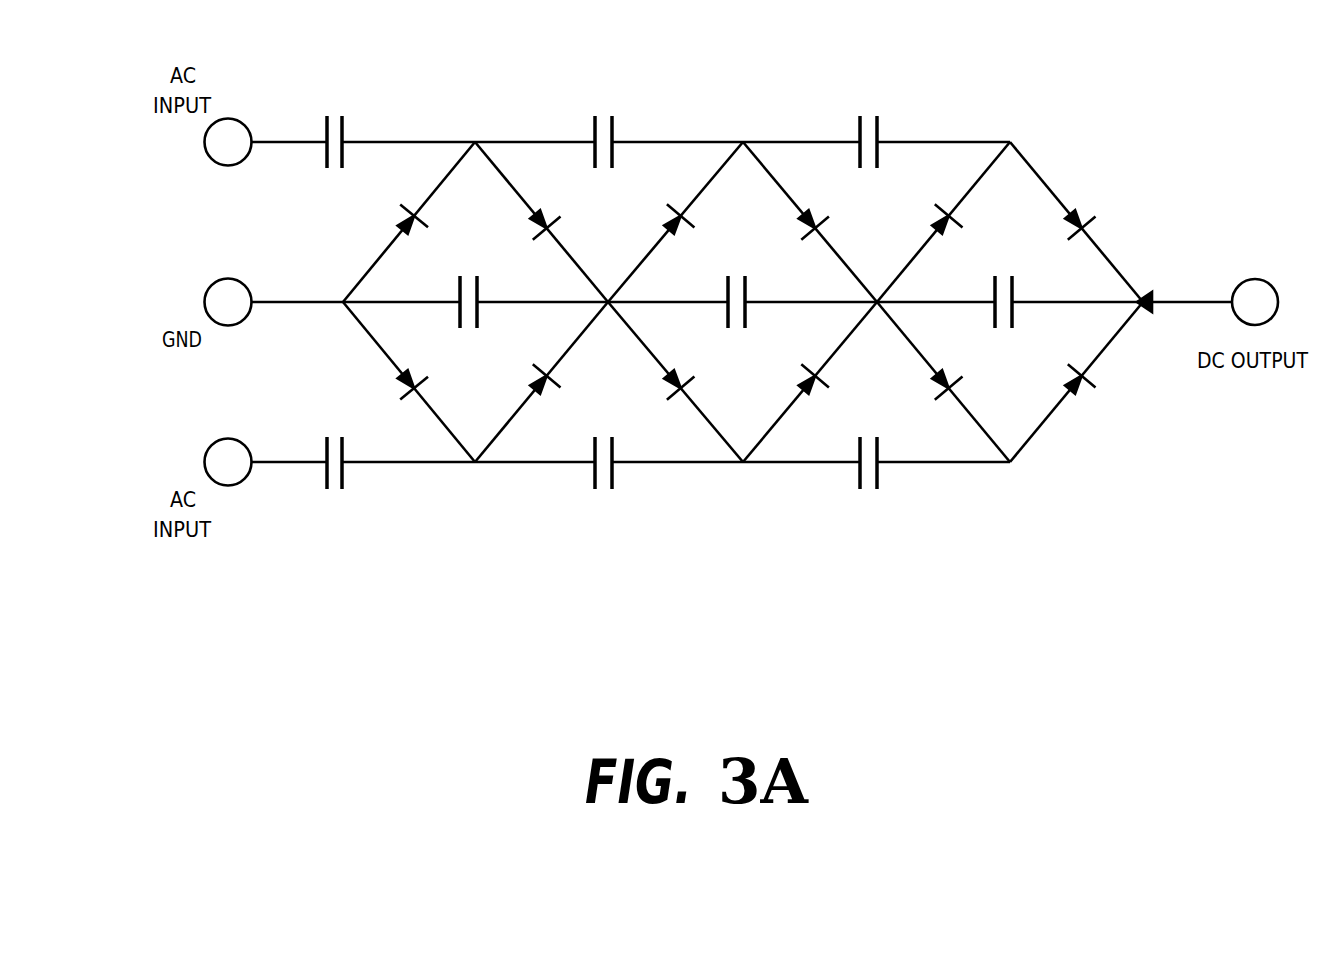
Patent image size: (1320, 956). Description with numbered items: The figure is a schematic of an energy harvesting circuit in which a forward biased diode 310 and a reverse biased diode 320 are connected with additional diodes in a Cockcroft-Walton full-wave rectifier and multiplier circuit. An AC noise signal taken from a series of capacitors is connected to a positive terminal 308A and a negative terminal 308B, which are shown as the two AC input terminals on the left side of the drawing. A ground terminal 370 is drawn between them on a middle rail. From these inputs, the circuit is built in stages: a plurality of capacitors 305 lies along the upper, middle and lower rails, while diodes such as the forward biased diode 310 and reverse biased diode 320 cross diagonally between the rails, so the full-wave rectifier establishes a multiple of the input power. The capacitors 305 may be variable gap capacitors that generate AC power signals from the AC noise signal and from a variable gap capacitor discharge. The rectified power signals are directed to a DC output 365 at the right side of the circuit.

The capacitors 305 is at (615, 133).
The positive terminal 308A is at (203, 141).
The negative terminal 308B is at (203, 462).
The forward biased diode 310 is at (408, 218).
The reverse biased diode 320 is at (410, 384).
The DC output 365 is at (1255, 279).
The ground terminal 370 is at (203, 303).